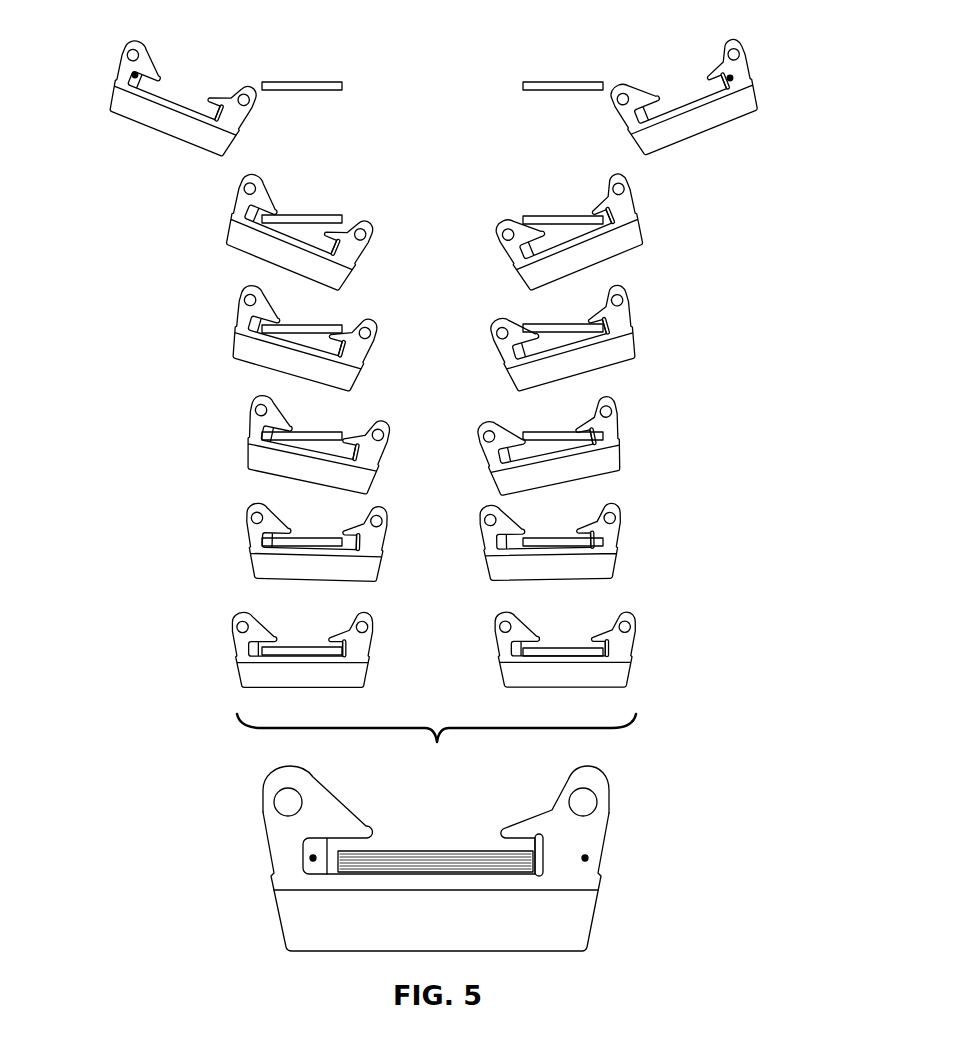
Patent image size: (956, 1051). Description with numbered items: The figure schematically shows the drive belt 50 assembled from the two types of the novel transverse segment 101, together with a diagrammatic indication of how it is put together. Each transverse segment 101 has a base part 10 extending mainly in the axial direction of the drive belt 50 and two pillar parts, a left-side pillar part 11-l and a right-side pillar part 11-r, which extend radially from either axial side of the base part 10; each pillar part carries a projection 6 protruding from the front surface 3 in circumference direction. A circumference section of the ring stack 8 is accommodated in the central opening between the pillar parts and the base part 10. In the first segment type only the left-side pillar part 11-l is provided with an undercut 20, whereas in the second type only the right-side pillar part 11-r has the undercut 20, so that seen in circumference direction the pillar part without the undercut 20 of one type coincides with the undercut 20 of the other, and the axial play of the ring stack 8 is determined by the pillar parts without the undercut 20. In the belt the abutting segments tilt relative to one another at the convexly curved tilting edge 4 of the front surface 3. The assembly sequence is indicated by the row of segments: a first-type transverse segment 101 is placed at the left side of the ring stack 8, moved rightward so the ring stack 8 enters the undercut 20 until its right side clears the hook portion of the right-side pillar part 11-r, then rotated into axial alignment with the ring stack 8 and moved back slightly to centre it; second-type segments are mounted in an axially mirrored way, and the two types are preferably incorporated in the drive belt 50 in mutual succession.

The transverse segment 101 is at (138, 130).
The ring stack 8 is at (297, 81).
The left-side pillar part 11-l is at (142, 66).
The right-side pillar part 11-r is at (232, 100).
The projection 6 is at (288, 800).
The base part 10 is at (222, 138).
The undercut 20 is at (135, 75).
The front surface 3 is at (586, 858).
The tilting edge 4 is at (578, 892).
The drive belt 50 is at (667, 831).